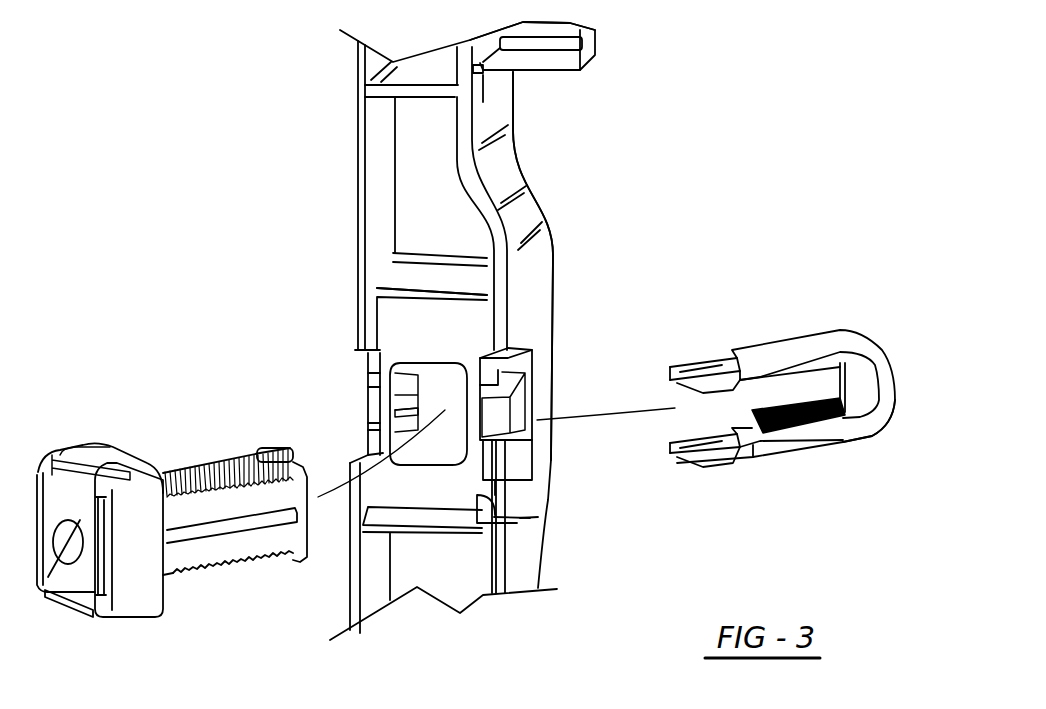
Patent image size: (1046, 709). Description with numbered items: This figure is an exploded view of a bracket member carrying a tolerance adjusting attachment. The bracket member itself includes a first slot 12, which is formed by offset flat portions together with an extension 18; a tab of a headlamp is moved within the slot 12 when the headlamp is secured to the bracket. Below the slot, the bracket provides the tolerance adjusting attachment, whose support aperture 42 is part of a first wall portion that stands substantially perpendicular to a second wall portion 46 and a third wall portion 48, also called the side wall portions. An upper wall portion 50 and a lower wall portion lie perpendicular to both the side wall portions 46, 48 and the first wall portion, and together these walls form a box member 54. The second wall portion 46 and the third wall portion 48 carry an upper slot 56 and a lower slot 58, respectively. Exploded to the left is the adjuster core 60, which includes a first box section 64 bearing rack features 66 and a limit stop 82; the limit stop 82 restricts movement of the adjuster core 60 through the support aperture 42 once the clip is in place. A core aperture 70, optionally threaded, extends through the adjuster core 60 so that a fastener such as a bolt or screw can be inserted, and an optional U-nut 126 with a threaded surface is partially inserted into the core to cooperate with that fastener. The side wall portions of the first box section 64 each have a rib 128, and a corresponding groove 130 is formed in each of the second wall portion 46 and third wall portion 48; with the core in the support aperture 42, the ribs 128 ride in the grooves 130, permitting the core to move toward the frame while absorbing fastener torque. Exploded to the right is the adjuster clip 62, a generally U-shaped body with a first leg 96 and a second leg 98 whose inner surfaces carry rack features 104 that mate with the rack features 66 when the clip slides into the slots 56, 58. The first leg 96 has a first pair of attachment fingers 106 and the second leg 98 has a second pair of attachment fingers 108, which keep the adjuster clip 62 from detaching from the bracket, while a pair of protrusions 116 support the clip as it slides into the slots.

The first slot 12 is at (560, 48).
The extension 18 is at (528, 62).
The support aperture 42 is at (427, 440).
The second wall portion 46 is at (367, 490).
The third wall portion 48 is at (517, 323).
The upper wall portion 50 is at (435, 278).
The box member 54 is at (490, 408).
The upper slot 56 is at (533, 378).
The lower slot 58 is at (520, 477).
The adjuster core 60 is at (233, 362).
The adjuster clip 62 is at (880, 316).
The first box section 64 is at (238, 545).
The rack features 66 is at (217, 463).
The core aperture 70 is at (47, 593).
The limit stop 82 is at (285, 460).
The first leg 96 is at (775, 345).
The second leg 98 is at (817, 435).
The rack features 104 is at (797, 432).
The first pair of attachment fingers 106 is at (700, 357).
The second pair of attachment fingers 108 is at (715, 447).
The protrusions 116 is at (847, 447).
The U-nut 126 is at (70, 500).
The ribs 128 is at (190, 543).
The groove 130 is at (387, 412).